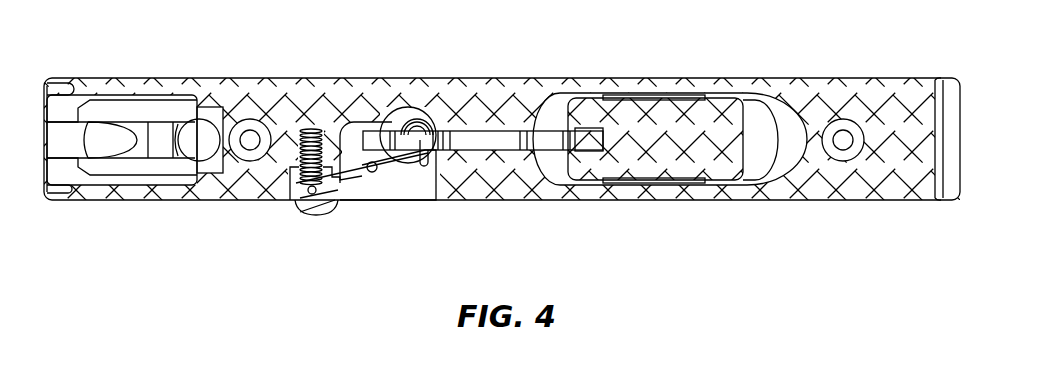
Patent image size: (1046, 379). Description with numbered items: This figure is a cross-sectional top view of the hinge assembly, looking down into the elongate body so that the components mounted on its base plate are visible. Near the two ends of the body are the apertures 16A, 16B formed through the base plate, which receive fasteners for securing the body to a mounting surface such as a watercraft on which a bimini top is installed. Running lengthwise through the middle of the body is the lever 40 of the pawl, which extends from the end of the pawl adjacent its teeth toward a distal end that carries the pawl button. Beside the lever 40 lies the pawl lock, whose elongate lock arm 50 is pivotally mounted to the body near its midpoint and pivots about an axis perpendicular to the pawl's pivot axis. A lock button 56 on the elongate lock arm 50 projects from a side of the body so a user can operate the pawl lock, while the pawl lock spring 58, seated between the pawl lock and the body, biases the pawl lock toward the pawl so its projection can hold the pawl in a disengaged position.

The aperture 16A is at (249, 130).
The aperture 16B is at (843, 130).
The lever 40 is at (481, 131).
The elongate lock arm 50 is at (405, 190).
The lock button 56 is at (313, 215).
The pawl lock spring 58 is at (313, 130).